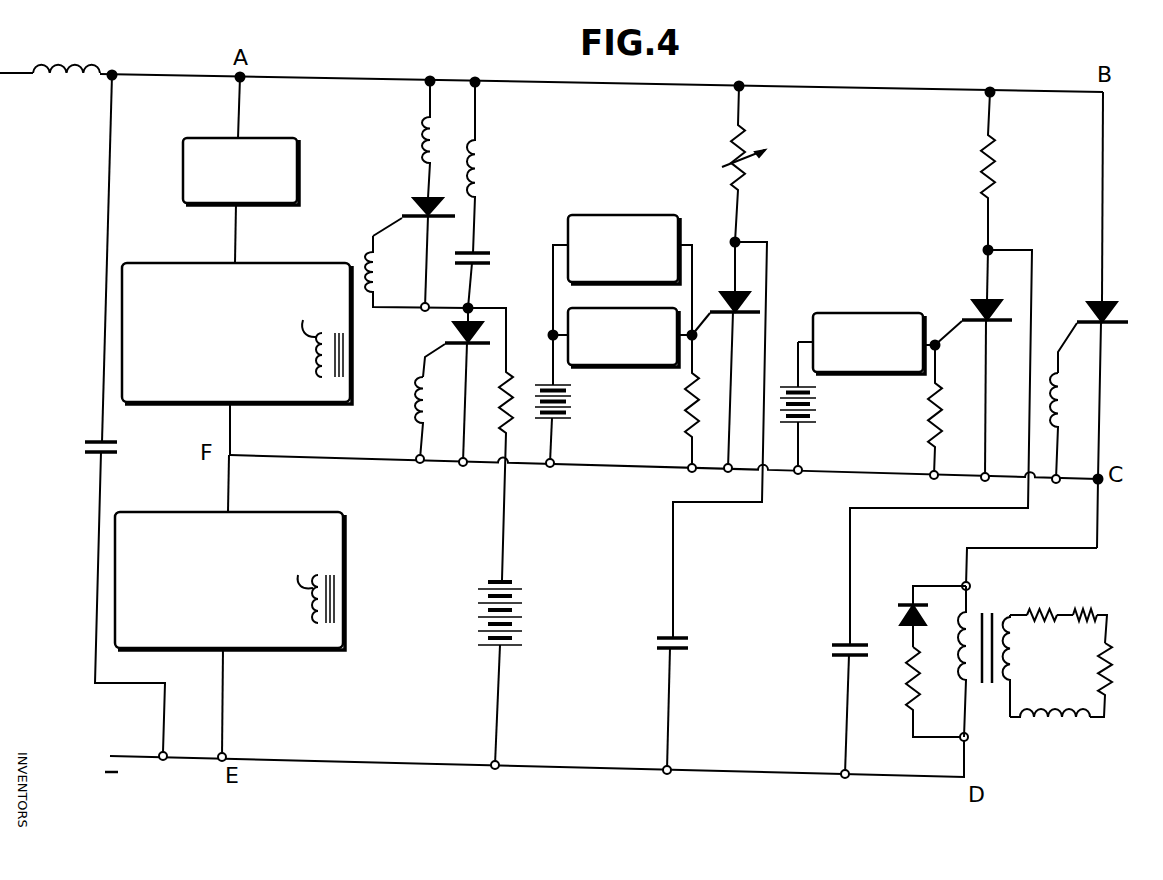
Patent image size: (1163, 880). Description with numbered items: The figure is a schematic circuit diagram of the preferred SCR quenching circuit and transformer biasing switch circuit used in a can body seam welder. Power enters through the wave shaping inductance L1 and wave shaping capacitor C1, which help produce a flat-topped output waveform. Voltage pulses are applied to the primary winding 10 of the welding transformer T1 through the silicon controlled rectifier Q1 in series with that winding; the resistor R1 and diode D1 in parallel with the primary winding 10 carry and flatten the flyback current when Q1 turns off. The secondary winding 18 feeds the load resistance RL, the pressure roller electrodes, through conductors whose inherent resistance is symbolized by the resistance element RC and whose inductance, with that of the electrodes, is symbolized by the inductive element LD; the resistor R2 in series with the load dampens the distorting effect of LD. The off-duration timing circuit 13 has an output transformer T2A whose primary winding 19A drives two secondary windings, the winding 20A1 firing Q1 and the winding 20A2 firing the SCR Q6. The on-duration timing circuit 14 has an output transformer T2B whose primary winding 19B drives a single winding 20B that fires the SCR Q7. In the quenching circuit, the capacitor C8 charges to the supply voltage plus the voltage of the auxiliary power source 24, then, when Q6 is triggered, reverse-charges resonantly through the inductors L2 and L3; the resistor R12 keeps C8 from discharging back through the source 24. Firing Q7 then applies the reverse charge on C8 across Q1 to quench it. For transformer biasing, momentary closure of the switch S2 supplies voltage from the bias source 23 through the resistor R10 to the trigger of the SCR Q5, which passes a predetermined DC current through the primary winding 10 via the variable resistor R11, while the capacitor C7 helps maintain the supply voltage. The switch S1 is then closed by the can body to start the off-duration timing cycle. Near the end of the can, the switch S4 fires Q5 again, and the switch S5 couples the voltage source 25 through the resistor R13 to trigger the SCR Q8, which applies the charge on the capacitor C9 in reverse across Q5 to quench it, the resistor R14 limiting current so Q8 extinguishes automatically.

The wave shaping inductance L1 is at (84, 78).
The wave shaping capacitor C1 is at (77, 445).
The off-duration timing circuit 13 is at (176, 266).
The on-duration timing circuit 14 is at (262, 650).
The switch S1 is at (282, 138).
The primary winding 19A is at (323, 339).
The output transformer T2A is at (318, 365).
The primary winding 19B is at (317, 588).
The output transformer T2B is at (310, 610).
The secondary winding 20A2 is at (364, 257).
The secondary winding 20B is at (408, 395).
The inductor L3 is at (418, 136).
The inductor L2 is at (488, 176).
The silicon controlled rectifier Q6 is at (406, 212).
The silicon controlled rectifier Q7 is at (454, 339).
The capacitor C8 is at (494, 266).
The resistor R12 is at (514, 385).
The auxiliary power source 24 is at (525, 610).
The switch S4 is at (645, 197).
The switch S2 is at (585, 366).
The bias source 23 is at (575, 405).
The resistor R10 is at (686, 380).
The variable resistor R11 is at (761, 164).
The silicon controlled rectifier Q5 is at (718, 296).
The capacitor C7 is at (653, 643).
The voltage source 25 is at (826, 412).
The switch S5 is at (868, 293).
The resistor R13 is at (926, 423).
The resistor R14 is at (997, 157).
The silicon controlled rectifier Q8 is at (970, 303).
The capacitor C9 is at (828, 650).
The silicon controlled rectifier Q1 is at (1124, 308).
The secondary winding 20A1 is at (1063, 404).
The diode D1 is at (895, 608).
The resistor R1 is at (890, 660).
The primary winding 10 is at (947, 650).
The welding transformer T1 is at (987, 695).
The secondary winding 18 is at (1015, 652).
The resistor R2 is at (1015, 590).
The resistance element RC is at (1073, 590).
The load resistance RL is at (1117, 643).
The inductive element LD is at (1042, 720).